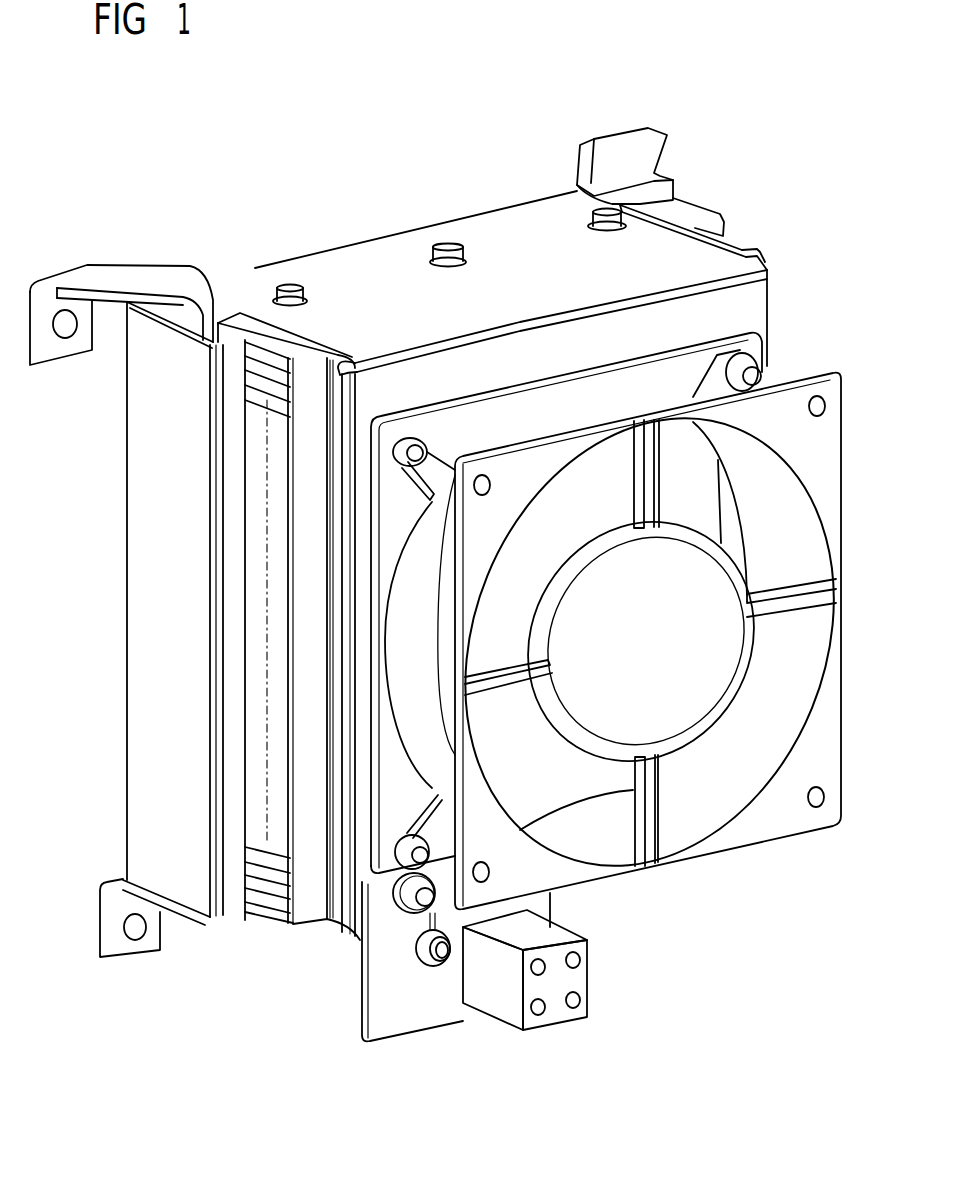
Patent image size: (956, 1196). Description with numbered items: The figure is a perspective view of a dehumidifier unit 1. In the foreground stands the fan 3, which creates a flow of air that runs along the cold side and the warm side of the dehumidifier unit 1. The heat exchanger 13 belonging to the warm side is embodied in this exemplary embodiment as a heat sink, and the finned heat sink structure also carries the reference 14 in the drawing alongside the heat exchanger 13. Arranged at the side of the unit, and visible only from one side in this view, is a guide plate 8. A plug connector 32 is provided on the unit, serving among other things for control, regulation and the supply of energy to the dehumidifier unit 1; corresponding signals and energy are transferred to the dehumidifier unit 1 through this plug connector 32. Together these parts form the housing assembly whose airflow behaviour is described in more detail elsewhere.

The dehumidifier unit 1 is at (256, 218).
The fan 3 is at (692, 716).
The guide plate 8 is at (153, 611).
The heat exchanger 13 is at (226, 675).
The cooling fins 14 is at (272, 886).
The plug connector 32 is at (558, 1013).